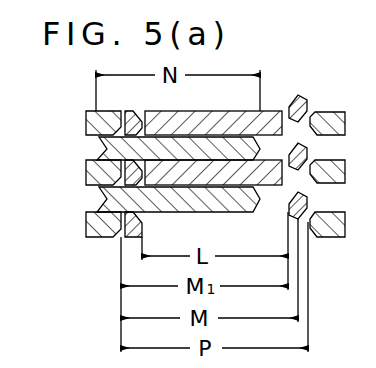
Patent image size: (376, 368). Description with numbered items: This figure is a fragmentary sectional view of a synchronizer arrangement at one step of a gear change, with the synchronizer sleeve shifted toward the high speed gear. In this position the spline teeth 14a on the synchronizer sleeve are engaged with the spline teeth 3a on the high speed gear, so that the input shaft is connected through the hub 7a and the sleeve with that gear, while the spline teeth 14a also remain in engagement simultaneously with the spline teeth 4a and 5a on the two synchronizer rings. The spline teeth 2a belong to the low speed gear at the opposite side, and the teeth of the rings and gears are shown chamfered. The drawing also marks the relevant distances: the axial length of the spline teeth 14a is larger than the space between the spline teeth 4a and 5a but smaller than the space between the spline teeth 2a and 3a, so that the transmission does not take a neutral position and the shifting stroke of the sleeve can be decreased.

The spline teeth 2a is at (335, 111).
The spline teeth 3a is at (100, 186).
The spline teeth 4a is at (300, 95).
The spline teeth 5a is at (123, 112).
The hub 7a is at (224, 112).
The spline teeth 14a is at (104, 150).